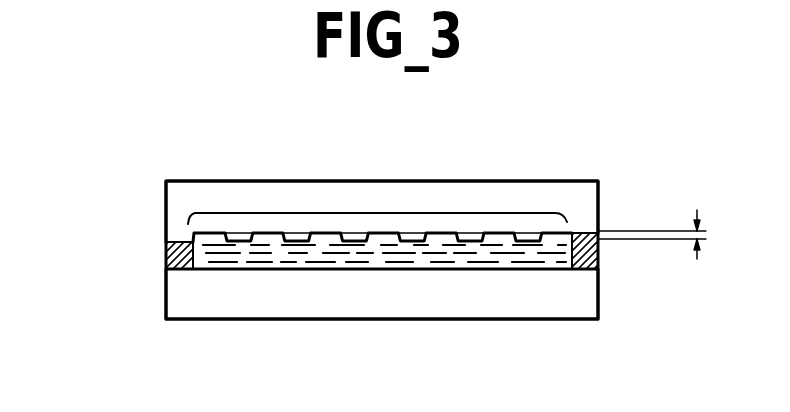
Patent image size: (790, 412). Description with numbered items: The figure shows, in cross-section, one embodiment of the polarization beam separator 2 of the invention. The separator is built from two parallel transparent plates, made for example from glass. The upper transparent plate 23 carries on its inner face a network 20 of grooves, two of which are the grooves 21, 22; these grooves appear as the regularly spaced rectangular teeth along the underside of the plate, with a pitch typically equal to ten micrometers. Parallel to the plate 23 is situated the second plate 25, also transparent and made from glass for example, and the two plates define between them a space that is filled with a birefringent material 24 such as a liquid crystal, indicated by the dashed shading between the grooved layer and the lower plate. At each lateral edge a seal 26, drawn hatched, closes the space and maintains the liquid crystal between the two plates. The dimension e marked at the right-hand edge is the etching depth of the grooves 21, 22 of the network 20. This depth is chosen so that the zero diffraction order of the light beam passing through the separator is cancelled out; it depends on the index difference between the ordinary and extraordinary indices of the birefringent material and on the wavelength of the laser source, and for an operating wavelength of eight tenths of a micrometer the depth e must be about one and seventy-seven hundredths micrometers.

The beam separator 2 is at (102, 186).
The network of grooves 20 is at (383, 207).
The groove 21 is at (560, 217).
The groove 22 is at (498, 234).
The transparent plate 23 is at (600, 200).
The birefringent material 24 is at (536, 255).
The plate 25 is at (600, 297).
The seal 26 is at (166, 251).
The etching depth e is at (666, 234).